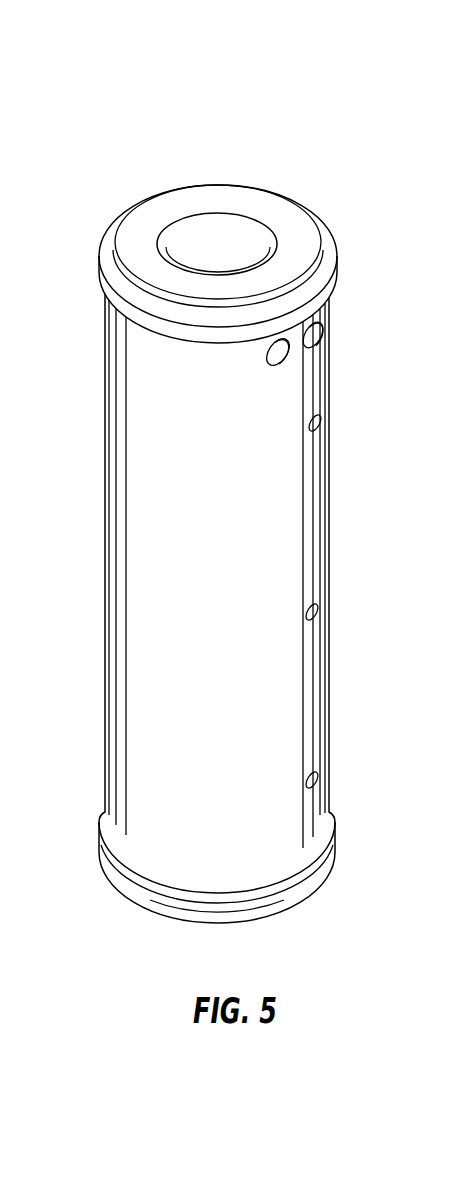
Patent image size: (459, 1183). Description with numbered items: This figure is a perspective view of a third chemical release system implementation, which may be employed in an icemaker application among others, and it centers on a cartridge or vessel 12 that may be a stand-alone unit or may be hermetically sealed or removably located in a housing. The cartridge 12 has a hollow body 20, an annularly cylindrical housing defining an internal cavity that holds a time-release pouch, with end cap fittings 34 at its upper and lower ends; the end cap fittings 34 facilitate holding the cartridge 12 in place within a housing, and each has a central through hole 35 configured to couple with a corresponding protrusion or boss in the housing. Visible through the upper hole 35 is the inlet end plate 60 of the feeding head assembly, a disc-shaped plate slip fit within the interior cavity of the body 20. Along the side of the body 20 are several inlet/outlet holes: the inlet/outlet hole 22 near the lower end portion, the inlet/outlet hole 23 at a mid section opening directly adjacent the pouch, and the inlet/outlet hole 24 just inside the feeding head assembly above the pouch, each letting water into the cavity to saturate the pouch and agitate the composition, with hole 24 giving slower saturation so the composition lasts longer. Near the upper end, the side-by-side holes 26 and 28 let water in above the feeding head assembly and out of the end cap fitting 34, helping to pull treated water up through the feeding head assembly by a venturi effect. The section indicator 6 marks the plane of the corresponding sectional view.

The cartridge or vessel 12 is at (180, 90).
The body 20 is at (137, 504).
The inlet/outlet hole 22 is at (318, 776).
The inlet/outlet hole 23 is at (318, 608).
The inlet/outlet hole 24 is at (322, 422).
The inlet/outlet hole 26 is at (325, 330).
The inlet/outlet hole 28 is at (292, 355).
The end cap fitting 34 is at (287, 210).
The central through hole 35 is at (232, 228).
The inlet end plate 60 is at (215, 272).
The section line 6- 6 is at (108, 160).